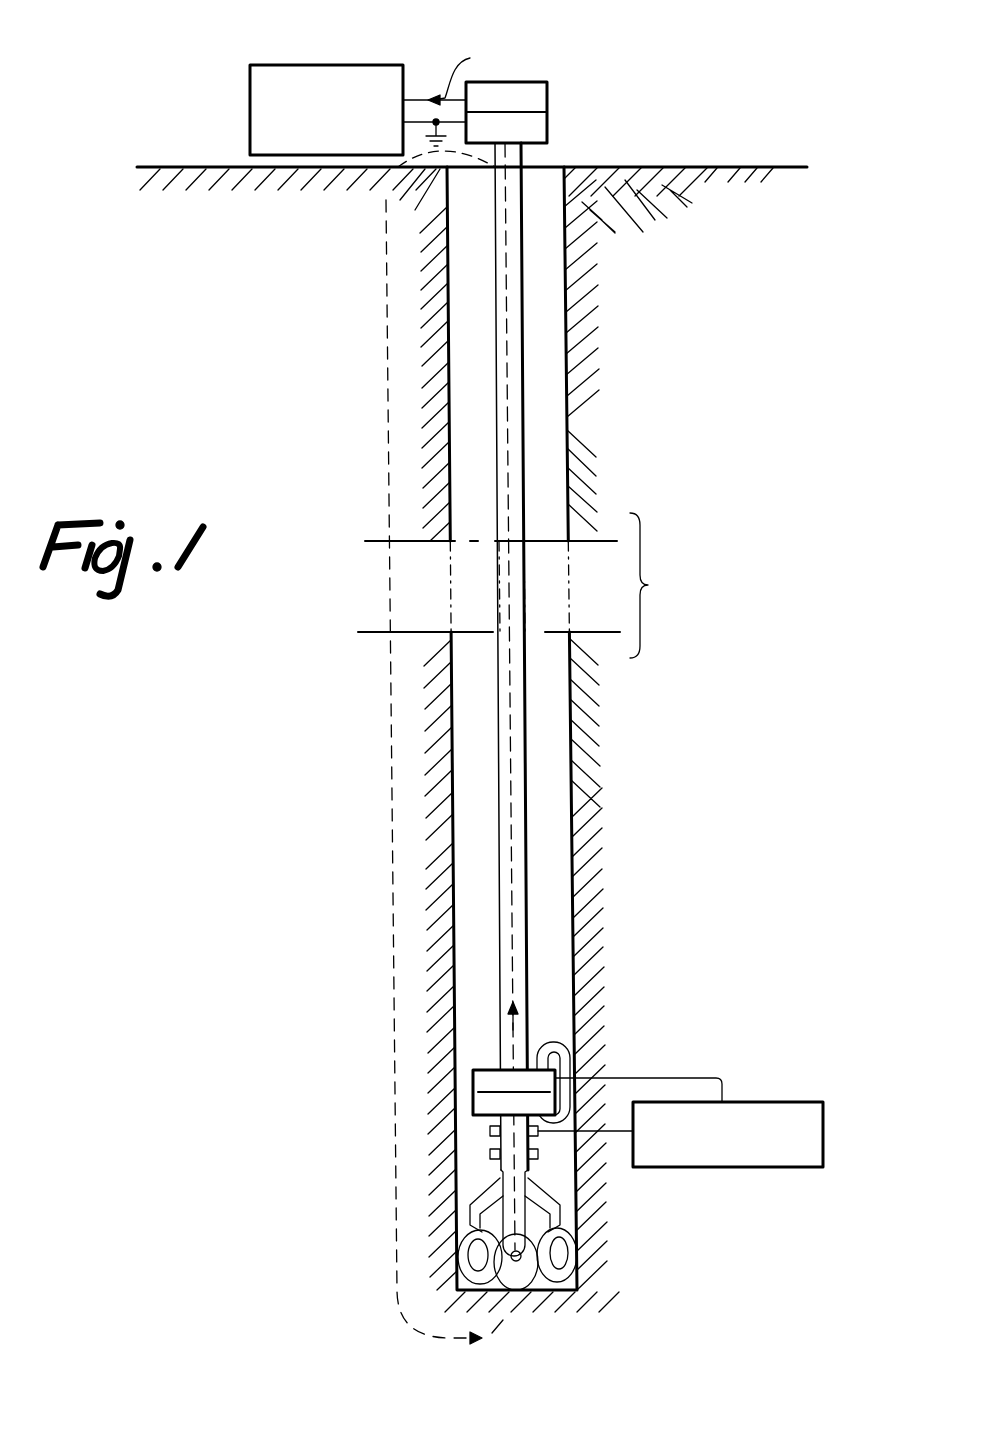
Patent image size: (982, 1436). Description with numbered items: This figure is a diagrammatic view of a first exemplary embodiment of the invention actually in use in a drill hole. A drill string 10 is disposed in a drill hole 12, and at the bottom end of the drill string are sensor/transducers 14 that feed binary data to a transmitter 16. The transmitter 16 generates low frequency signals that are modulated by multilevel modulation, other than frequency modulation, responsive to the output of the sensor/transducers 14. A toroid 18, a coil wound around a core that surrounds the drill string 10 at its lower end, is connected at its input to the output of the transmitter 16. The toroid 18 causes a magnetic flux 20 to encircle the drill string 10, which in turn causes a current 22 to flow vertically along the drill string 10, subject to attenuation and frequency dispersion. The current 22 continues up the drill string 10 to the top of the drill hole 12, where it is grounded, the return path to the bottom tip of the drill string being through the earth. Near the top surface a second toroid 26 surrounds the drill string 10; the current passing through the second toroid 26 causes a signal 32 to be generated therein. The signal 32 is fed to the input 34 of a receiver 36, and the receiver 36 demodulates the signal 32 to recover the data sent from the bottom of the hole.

The drill string 10 is at (522, 262).
The drill hole 12 is at (560, 180).
The sensor/transducers 14 is at (492, 1152).
The transmitter 16 is at (783, 1154).
The toroid 18 is at (548, 1076).
The magnetic flux 20 is at (553, 1044).
The current 22 is at (386, 284).
The second toroid 26 is at (547, 90).
The signal 32 is at (465, 70).
The input 34 is at (404, 100).
The receiver 36 is at (355, 70).